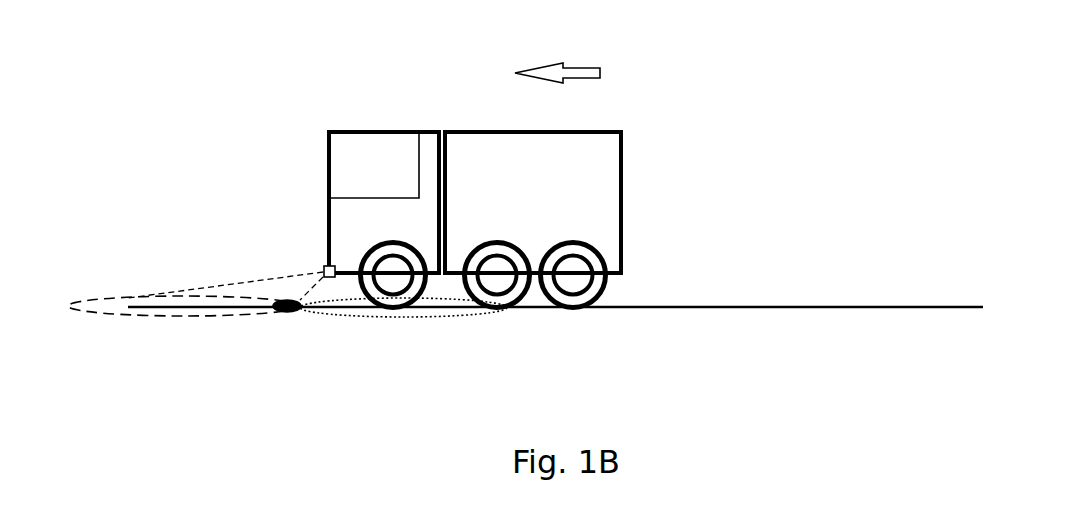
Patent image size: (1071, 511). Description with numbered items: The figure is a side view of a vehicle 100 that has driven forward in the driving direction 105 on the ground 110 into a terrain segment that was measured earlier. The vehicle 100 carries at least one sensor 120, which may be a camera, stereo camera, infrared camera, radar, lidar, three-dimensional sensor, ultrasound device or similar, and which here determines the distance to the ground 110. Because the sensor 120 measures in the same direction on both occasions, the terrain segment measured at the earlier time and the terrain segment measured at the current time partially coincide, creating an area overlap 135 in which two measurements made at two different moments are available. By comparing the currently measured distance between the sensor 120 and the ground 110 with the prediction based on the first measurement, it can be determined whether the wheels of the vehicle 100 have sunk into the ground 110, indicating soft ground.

The vehicle 100 is at (367, 130).
The driving direction 105 is at (557, 58).
The ground 110 is at (910, 345).
The sensor 120 is at (323, 268).
The area overlap 135 is at (273, 302).